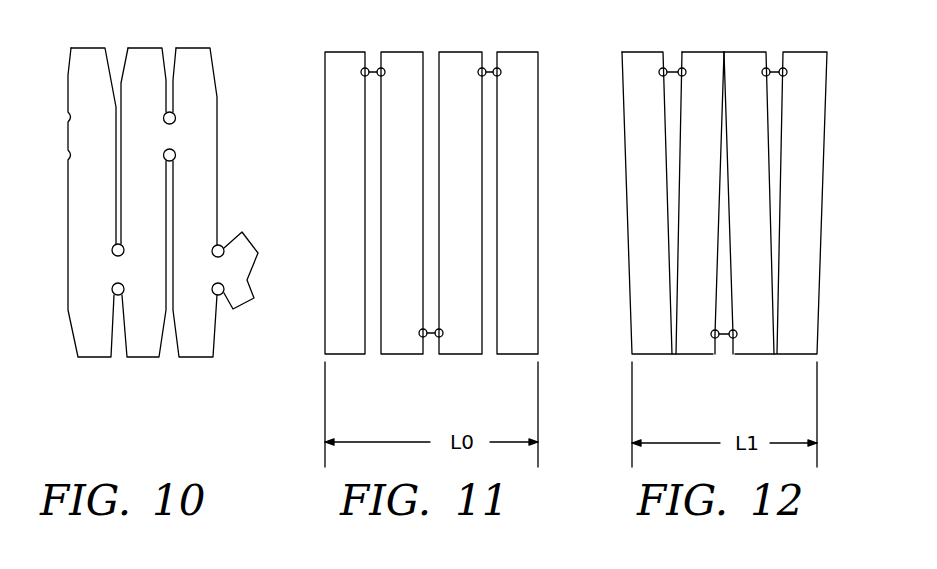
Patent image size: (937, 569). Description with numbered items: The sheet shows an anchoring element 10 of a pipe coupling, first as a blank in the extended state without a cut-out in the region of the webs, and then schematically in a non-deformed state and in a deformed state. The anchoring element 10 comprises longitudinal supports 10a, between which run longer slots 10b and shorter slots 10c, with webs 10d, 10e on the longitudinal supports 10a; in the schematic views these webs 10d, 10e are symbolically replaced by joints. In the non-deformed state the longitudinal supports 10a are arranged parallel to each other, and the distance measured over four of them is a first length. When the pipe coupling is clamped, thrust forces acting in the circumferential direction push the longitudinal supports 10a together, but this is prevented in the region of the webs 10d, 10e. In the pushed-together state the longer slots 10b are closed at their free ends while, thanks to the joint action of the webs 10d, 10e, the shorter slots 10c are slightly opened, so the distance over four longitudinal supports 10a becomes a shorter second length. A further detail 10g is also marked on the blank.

In FIG. 10, the anchoring element 10 is at (197, 360).
In FIG. 11, the anchoring element 10 is at (343, 357).
In FIG. 12, the anchoring element 10 is at (652, 357).
In FIG. 10, the longitudinal supports 10a is at (97, 185).
In FIG. 11, the longitudinal supports 10a is at (518, 203).
In FIG. 12, the longitudinal supports 10a is at (808, 223).
In FIG. 10, the longer slots 10b is at (117, 145).
In FIG. 11, the longer slots 10b is at (373, 256).
In FIG. 12, the longer slots 10b is at (673, 293).
In FIG. 10, the shorter slots 10c is at (118, 312).
In FIG. 11, the shorter slots 10c is at (375, 58).
In FIG. 12, the shorter slots 10c is at (673, 59).
In FIG. 10, the webs 10d is at (113, 267).
In FIG. 11, the webs 10d is at (432, 339).
In FIG. 12, the webs 10d is at (723, 340).
In FIG. 10, the webs 10e is at (160, 140).
In FIG. 11, the webs 10e is at (490, 64).
In FIG. 12, the webs 10e is at (776, 66).
In FIG. 10, the tapered corner 10g is at (100, 328).